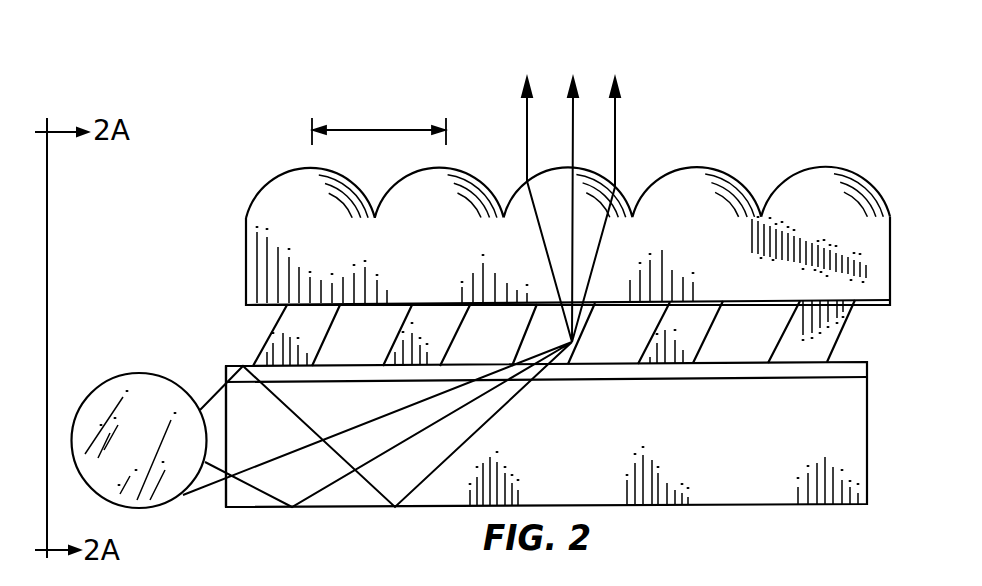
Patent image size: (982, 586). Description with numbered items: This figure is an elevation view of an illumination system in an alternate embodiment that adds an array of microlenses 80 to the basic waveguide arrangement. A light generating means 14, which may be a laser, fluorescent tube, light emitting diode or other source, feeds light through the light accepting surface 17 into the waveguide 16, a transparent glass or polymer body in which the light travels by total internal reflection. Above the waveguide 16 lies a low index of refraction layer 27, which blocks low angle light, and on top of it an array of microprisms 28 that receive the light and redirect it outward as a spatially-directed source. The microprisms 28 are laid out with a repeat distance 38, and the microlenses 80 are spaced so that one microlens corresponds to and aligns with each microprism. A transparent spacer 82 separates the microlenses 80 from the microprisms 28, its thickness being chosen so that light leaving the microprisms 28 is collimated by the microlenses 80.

The light generating means 14 is at (133, 372).
The waveguide 16 is at (783, 498).
The light accepting surface 17 is at (225, 498).
The low index of refraction layer 27 is at (732, 371).
The array of microprisms 28 is at (805, 352).
The repeat distance 38 is at (368, 129).
The array of microlenses 80 is at (805, 166).
The spacer 82 is at (782, 290).